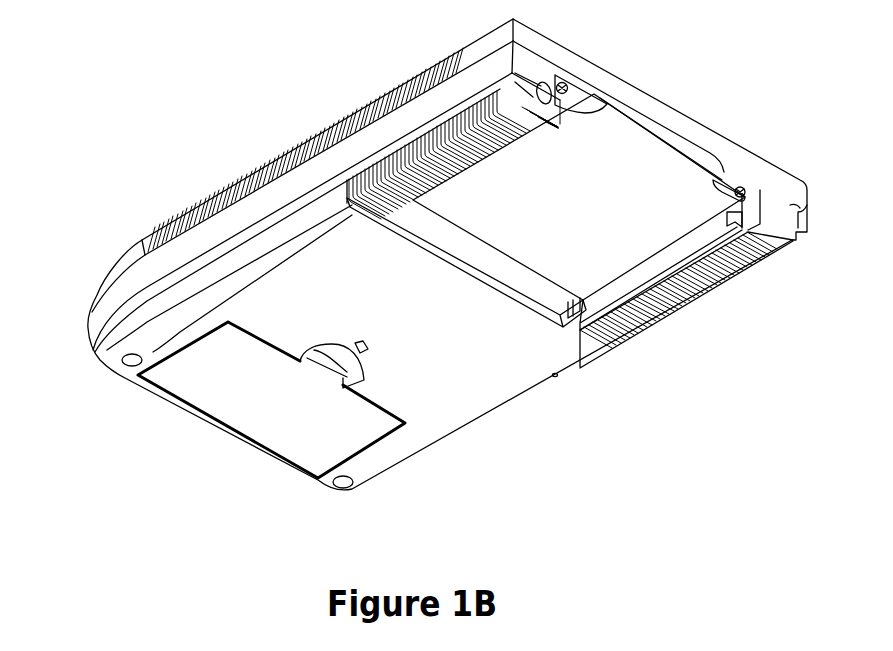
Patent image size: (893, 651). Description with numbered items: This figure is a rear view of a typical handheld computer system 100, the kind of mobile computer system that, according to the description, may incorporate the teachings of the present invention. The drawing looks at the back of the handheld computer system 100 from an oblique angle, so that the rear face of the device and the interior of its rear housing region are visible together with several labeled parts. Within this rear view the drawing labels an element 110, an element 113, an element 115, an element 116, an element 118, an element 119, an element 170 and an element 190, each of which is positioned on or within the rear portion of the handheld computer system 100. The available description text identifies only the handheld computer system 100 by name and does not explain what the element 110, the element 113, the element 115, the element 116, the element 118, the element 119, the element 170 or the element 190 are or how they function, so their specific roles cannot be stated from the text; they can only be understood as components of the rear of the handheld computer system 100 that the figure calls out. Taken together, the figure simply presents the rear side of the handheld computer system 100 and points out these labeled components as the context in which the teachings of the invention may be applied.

The handheld computer system 100 is at (378, 544).
The circuit board 110 is at (579, 197).
The notch 113 is at (562, 298).
The rail 115 is at (448, 203).
The bracket 116 is at (725, 216).
The latch bracket 118 is at (590, 94).
The screw 119 is at (565, 82).
The side wall 170 is at (663, 118).
The button dome 190 is at (372, 345).